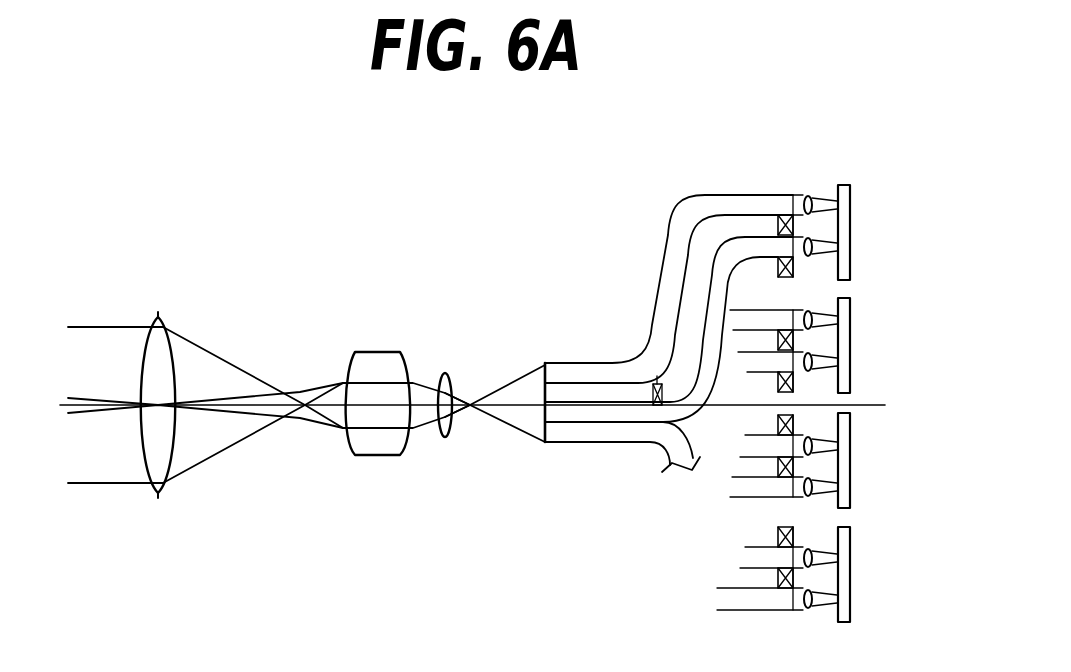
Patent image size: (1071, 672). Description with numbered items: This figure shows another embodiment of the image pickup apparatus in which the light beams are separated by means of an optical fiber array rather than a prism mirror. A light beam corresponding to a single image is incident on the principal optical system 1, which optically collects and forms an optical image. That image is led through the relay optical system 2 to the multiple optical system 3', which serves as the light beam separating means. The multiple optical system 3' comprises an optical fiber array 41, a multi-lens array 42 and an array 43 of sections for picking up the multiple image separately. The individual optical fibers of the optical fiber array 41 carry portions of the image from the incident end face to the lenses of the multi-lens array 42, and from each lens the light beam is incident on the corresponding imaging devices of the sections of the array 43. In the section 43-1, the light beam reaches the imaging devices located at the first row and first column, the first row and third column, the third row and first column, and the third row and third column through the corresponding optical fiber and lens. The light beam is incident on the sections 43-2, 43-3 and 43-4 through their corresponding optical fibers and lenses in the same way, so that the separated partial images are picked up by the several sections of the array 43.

The principal optical system 1 is at (160, 494).
The relay optical system 2 is at (378, 456).
The multiple optical system 3' is at (528, 466).
The optical fiber array 41 is at (652, 313).
The multi-lens array 42 is at (809, 193).
The array of sections 43 is at (846, 358).
The section 43-1 is at (852, 226).
The section 43-2 is at (852, 344).
The section 43-3 is at (852, 450).
The section 43-4 is at (852, 555).